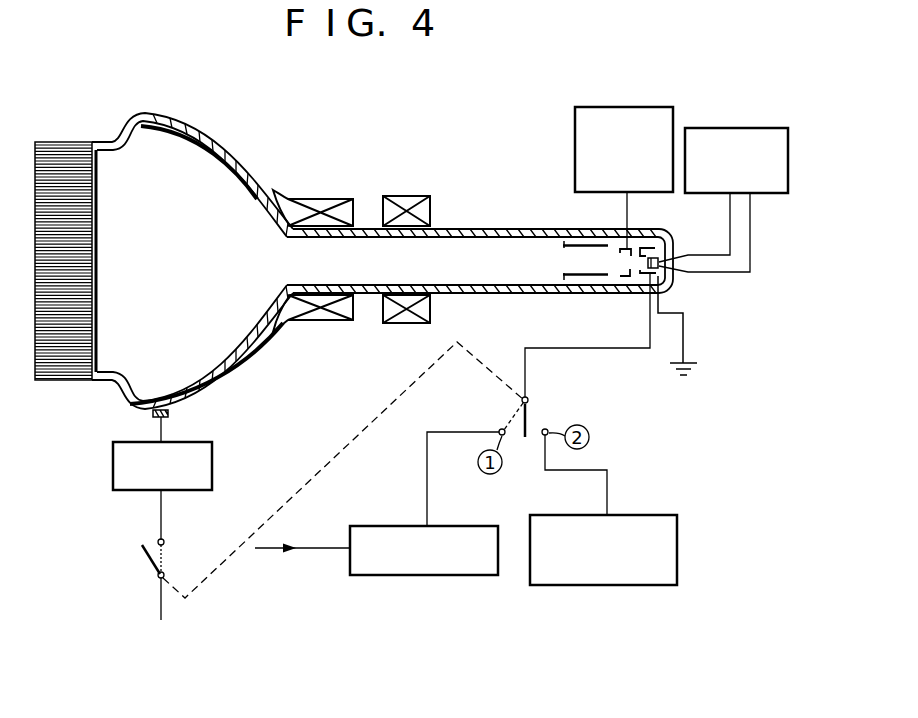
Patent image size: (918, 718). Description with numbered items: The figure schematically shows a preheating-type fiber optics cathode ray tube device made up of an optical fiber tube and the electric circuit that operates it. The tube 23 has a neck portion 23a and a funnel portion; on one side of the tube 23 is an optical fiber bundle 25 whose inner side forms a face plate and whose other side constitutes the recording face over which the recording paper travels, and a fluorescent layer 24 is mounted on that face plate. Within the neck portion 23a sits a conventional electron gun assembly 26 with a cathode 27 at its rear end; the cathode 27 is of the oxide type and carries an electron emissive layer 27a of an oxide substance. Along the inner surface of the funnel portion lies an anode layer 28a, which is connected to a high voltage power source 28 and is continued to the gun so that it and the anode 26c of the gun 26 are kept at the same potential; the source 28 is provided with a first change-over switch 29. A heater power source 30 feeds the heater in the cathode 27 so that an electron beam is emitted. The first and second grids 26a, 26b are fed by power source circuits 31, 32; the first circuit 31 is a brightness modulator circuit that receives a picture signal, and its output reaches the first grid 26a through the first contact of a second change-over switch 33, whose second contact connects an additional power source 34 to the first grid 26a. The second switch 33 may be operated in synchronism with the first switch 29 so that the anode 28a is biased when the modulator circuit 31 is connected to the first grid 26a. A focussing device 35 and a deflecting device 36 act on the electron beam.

The tube 23 is at (236, 150).
The neck portion 23a is at (493, 229).
The fluorescent layer 24 is at (104, 305).
The optical fiber bundle 25 is at (53, 381).
The electron gun assembly 26 is at (588, 276).
The first grid 26a is at (643, 276).
The second grid 26b is at (620, 249).
The anode 26c is at (563, 246).
The cathode 27 is at (659, 264).
The electron emissive layer 27a is at (641, 248).
The high voltage power source 28 is at (213, 465).
The anode layer 28a is at (240, 366).
The first change-over switch 29 is at (145, 562).
The heater power source 30 is at (736, 128).
The power source circuit 31 is at (412, 577).
The power source circuit 32 is at (617, 107).
The second change-over switch 33 is at (533, 424).
The additional power source 34 is at (612, 586).
The electron beam focussing device 35 is at (405, 196).
The electron beam deflecting device 36 is at (318, 199).